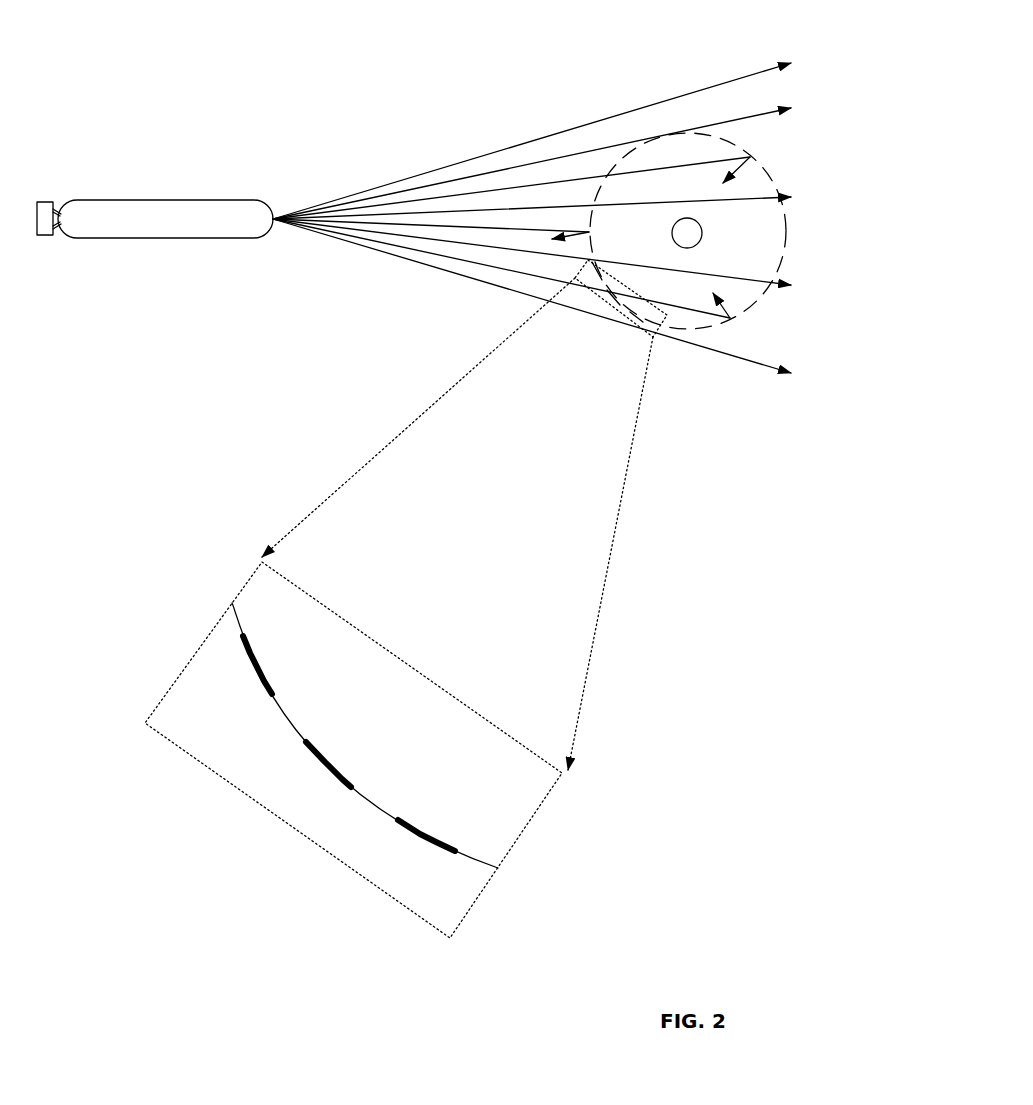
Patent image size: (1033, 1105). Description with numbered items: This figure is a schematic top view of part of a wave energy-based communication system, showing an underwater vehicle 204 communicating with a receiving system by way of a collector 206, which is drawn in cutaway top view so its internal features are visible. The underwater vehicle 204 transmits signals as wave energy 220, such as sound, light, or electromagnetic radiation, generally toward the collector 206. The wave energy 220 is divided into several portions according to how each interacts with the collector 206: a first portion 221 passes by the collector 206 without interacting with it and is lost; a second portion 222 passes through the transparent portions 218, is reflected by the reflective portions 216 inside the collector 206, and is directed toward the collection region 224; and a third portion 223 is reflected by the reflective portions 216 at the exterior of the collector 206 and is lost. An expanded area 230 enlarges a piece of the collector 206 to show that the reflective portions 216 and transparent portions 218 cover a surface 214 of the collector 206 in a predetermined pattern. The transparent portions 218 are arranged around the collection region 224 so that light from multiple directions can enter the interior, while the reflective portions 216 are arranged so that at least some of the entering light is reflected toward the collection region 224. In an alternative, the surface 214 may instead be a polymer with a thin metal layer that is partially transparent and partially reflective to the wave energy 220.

The underwater vehicle 204 is at (162, 198).
The collector 206 is at (622, 88).
The wave energy 220 is at (405, 163).
The first portion 221 is at (340, 243).
The second portion 222 is at (423, 253).
The third portion 223 is at (533, 229).
The collection region 224 is at (703, 235).
The expanded area 230 is at (630, 318).
The surface 214 is at (260, 712).
The reflective portions 216 is at (260, 667).
The transparent portions 218 is at (367, 797).